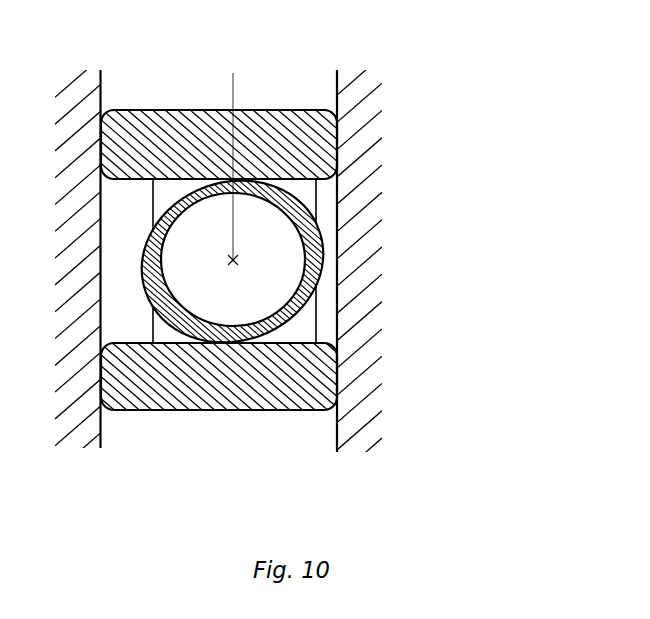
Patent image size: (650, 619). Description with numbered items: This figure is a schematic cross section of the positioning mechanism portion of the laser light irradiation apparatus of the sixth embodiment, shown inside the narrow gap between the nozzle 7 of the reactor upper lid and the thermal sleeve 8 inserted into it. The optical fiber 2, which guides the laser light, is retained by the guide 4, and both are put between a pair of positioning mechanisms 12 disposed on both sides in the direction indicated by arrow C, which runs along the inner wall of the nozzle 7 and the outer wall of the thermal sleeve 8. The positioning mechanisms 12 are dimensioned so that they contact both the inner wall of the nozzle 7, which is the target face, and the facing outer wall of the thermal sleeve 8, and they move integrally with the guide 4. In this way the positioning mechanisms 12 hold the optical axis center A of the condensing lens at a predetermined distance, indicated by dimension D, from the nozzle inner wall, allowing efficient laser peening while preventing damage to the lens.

The optical fiber 2 is at (277, 237).
The guide 4 is at (325, 258).
The nozzle 7 is at (75, 413).
The thermal sleeve 8 is at (355, 422).
The positioning mechanism 12 is at (297, 150).
The optical axis center A is at (233, 262).
The arrow C (direction along the walls) C is at (224, 85).
The dimension D (predetermined distance) D is at (293, 29).